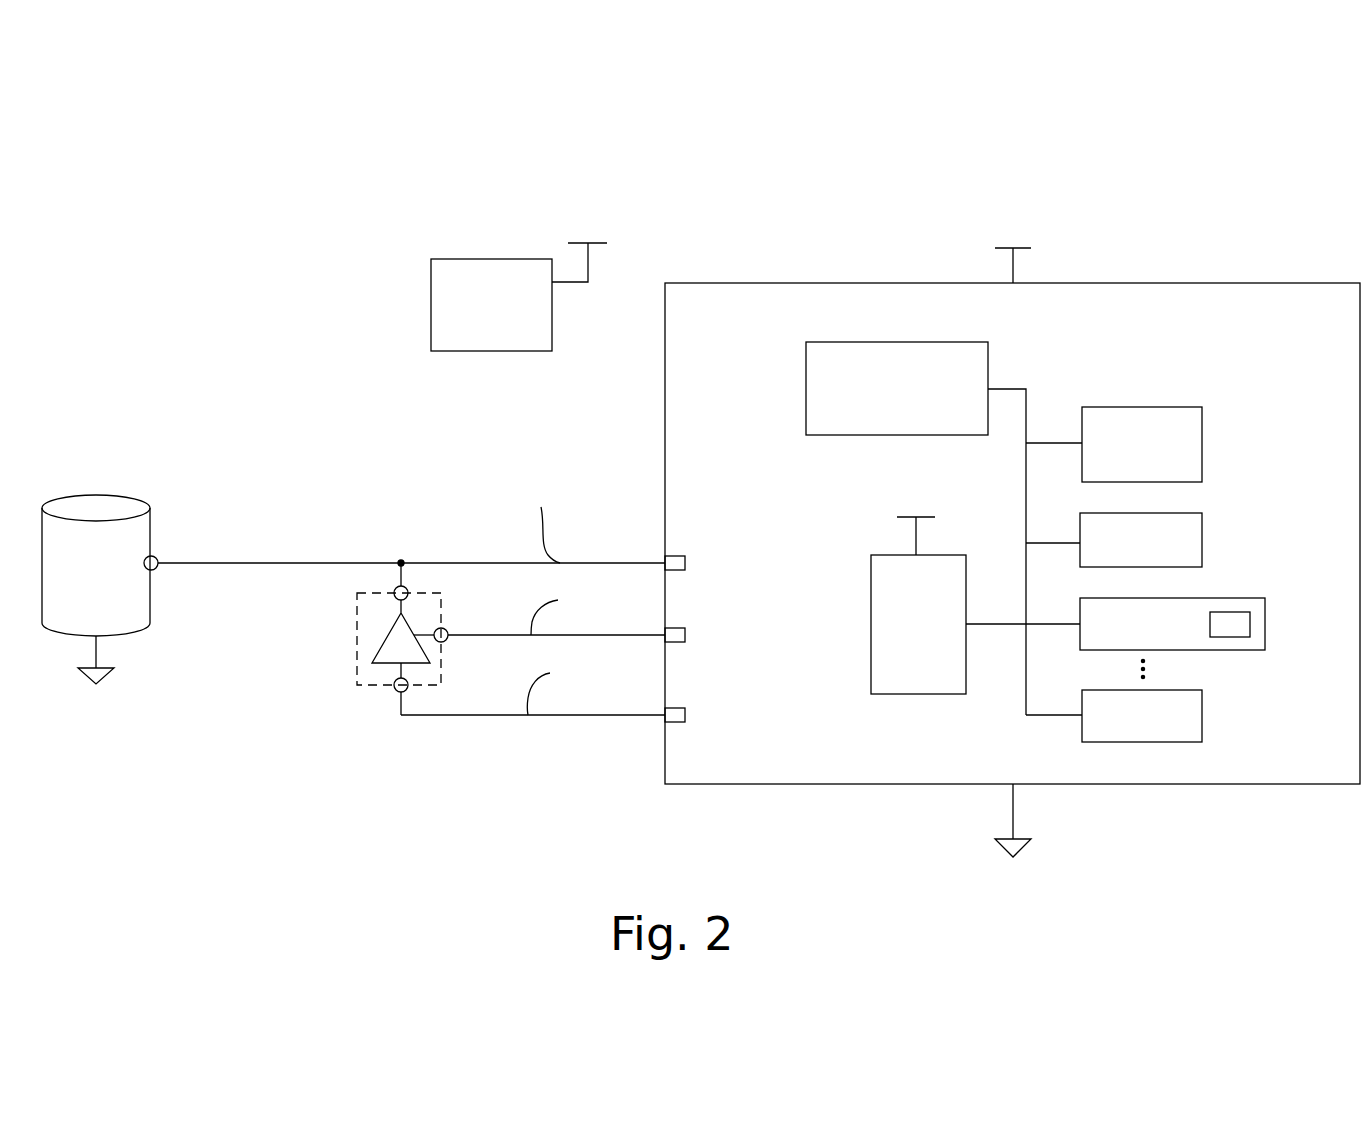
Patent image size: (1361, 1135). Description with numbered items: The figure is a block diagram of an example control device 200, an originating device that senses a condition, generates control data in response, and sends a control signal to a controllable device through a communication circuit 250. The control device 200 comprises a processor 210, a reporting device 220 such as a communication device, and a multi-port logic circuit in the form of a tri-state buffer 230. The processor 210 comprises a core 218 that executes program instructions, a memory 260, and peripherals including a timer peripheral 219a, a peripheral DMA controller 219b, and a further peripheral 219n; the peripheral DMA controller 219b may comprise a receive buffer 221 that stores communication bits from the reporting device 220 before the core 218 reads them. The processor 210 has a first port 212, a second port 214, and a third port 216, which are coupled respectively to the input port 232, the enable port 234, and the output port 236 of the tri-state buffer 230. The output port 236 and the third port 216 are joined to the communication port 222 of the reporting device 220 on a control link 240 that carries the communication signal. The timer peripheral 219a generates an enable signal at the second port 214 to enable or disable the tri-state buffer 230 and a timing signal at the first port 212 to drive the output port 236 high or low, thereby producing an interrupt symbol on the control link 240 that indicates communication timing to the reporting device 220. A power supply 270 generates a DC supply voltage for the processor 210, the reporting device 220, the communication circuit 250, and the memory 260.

The control device 200 is at (595, 145).
The processor 210 is at (1220, 784).
The first port 212 is at (685, 720).
The second port 214 is at (685, 641).
The third port 216 is at (685, 566).
The core 218 is at (918, 590).
The timer peripheral 219a is at (1190, 535).
The peripheral DMA controller 219b is at (1232, 650).
The peripheral 219n is at (1114, 716).
The reporting device 220 is at (92, 513).
The receive buffer 221 is at (1237, 617).
The communication port 222 is at (158, 562).
The tri-state buffer 230 is at (357, 628).
The input port 232 is at (397, 690).
The enable port 234 is at (444, 641).
The output port 236 is at (407, 590).
The control link 240 is at (268, 562).
The communication circuit 250 is at (972, 352).
The memory 260 is at (1190, 430).
The power supply 270 is at (442, 259).